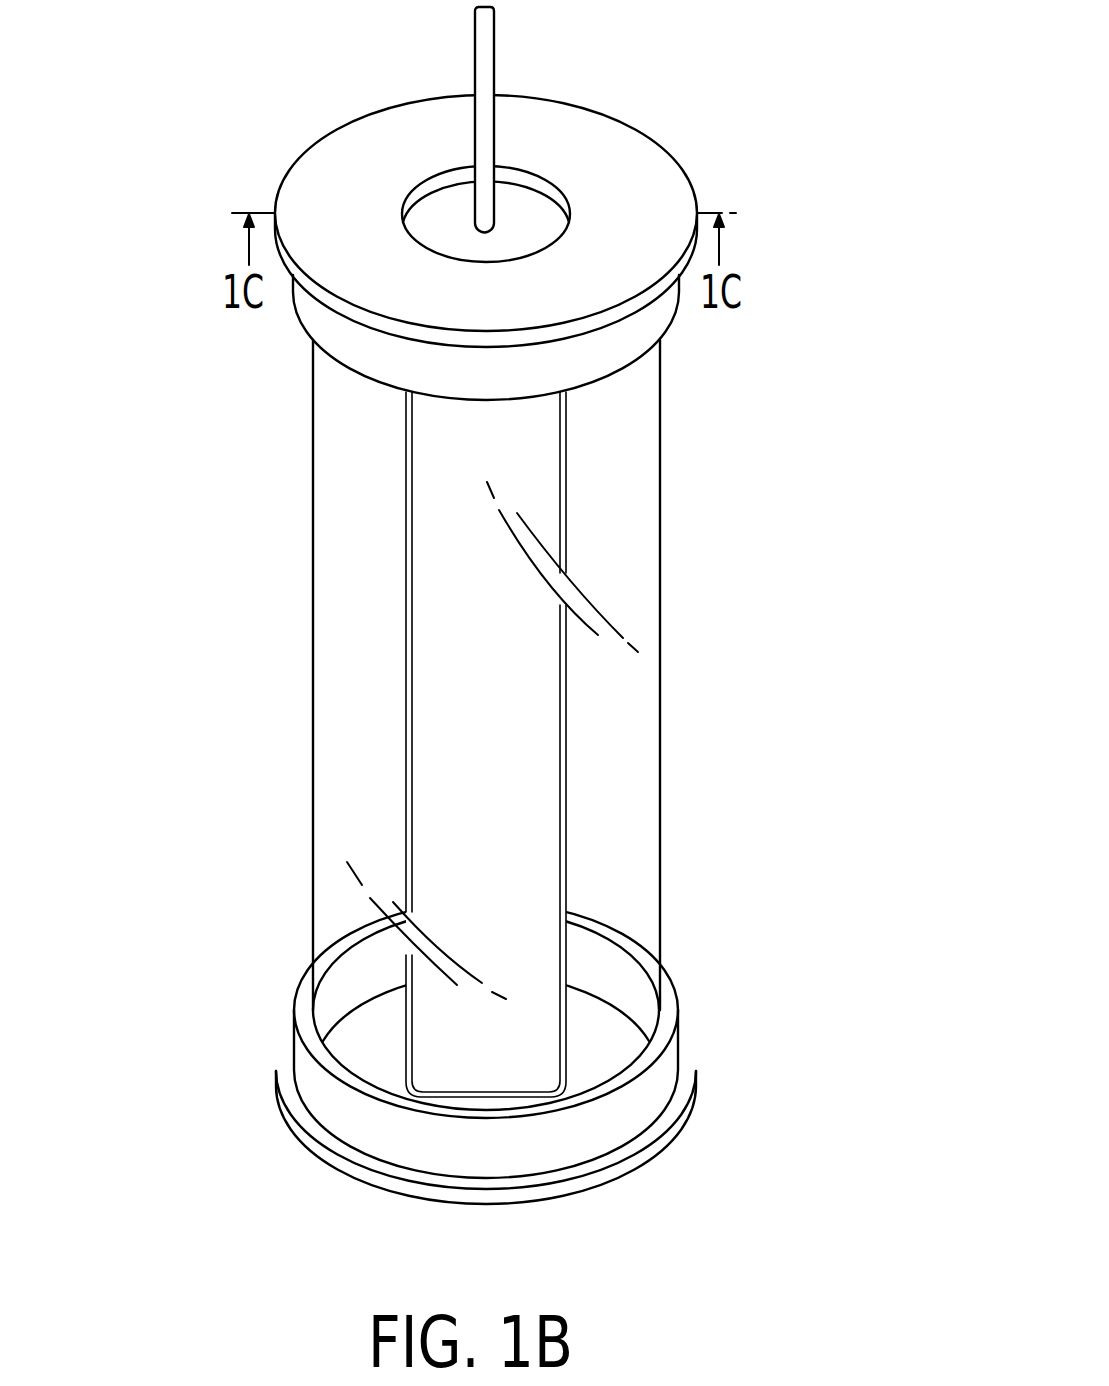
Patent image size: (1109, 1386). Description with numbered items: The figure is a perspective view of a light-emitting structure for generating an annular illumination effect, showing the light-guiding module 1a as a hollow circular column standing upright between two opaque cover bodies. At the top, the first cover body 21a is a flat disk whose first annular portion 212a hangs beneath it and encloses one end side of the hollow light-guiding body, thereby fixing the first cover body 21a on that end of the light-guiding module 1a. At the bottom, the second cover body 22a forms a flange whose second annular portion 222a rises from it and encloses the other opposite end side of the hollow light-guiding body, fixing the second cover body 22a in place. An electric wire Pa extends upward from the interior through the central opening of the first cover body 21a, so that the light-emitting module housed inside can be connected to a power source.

The electric wire Pa is at (466, 38).
The first cover body 21a is at (688, 146).
The first annular portion 212a is at (645, 335).
The light-guiding module 1a is at (684, 625).
The second annular portion 222a is at (670, 983).
The second cover body 22a is at (708, 1035).